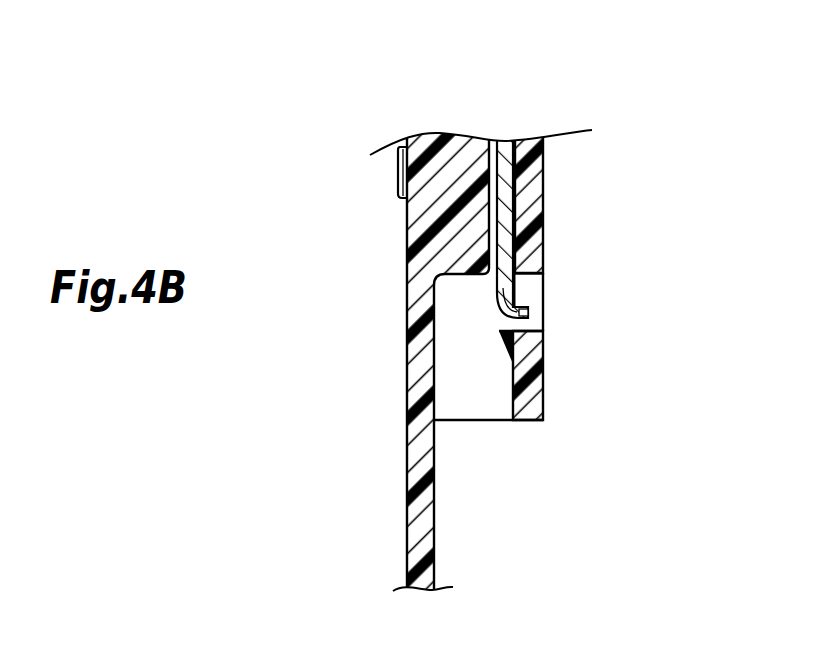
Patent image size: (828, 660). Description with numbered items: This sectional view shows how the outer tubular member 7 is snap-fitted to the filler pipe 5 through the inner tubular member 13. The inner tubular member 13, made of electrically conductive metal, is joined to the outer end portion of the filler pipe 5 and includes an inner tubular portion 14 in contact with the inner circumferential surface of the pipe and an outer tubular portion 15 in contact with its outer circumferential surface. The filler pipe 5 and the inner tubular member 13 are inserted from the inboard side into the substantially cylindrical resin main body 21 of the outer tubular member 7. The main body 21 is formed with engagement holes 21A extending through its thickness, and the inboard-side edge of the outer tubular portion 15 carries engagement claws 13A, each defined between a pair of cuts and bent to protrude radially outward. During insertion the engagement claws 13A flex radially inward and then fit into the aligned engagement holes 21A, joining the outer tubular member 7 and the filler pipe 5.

The filler pipe 5 is at (410, 296).
The outer tubular member 7 is at (520, 148).
The inner tubular member 13 is at (510, 61).
The engagement claw 13A is at (530, 314).
The inner tubular portion 14 is at (401, 162).
The outer tubular portion 15 is at (503, 158).
The main body 21 is at (538, 148).
The engagement hole 21A is at (528, 285).